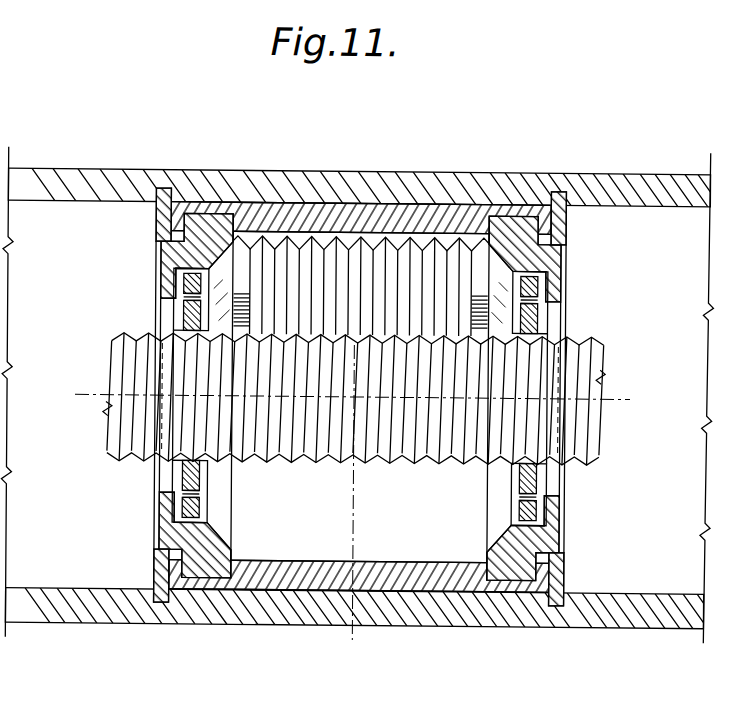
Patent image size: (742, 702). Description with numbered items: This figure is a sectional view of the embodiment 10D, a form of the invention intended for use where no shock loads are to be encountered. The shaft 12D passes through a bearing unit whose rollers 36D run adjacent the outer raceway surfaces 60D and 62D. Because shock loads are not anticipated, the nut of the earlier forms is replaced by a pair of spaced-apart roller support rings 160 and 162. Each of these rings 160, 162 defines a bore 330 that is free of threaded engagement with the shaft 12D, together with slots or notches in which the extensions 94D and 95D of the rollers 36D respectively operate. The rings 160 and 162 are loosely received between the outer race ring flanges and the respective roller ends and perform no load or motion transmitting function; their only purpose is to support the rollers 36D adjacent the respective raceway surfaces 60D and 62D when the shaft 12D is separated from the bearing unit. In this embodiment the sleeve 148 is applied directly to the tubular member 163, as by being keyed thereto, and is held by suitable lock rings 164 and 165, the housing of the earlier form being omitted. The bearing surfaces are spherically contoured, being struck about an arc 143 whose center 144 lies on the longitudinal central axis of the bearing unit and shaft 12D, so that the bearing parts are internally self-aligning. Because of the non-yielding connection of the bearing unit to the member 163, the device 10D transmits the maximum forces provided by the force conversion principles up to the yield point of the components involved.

The embodiment 10D is at (557, 168).
The shaft 12D is at (604, 341).
The rollers 36D is at (424, 235).
The raceway surface 60D is at (545, 543).
The raceway surface 62D is at (210, 527).
The extension 94D is at (535, 287).
The extension 95D is at (165, 270).
The arc 143 is at (485, 540).
The center 144 is at (302, 340).
The sleeve 148 is at (398, 587).
The roller support ring 160 is at (522, 500).
The roller support ring 162 is at (195, 492).
The tubular member 163 is at (287, 172).
The lock ring 164 is at (153, 605).
The lock ring 165 is at (550, 600).
The bore 330 is at (150, 337).